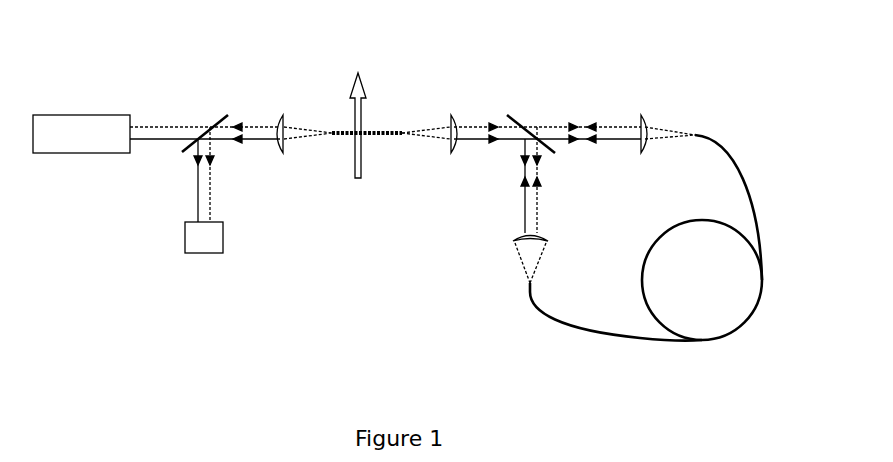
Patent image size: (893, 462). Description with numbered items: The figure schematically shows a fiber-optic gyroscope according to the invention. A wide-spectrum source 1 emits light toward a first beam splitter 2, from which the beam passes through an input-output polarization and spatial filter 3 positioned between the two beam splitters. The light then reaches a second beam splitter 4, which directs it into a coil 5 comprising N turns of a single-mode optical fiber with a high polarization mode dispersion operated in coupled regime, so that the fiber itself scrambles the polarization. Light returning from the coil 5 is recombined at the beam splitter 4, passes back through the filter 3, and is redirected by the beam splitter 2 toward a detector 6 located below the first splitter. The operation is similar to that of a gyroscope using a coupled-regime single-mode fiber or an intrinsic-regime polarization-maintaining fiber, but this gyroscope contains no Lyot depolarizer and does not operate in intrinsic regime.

The wide-spectrum source 1 is at (107, 153).
The beam splitter 2 is at (220, 117).
The input-output polarization and spatial filter 3 is at (340, 136).
The beam splitter 4 is at (508, 117).
The coil 5 is at (583, 328).
The detector 6 is at (200, 253).